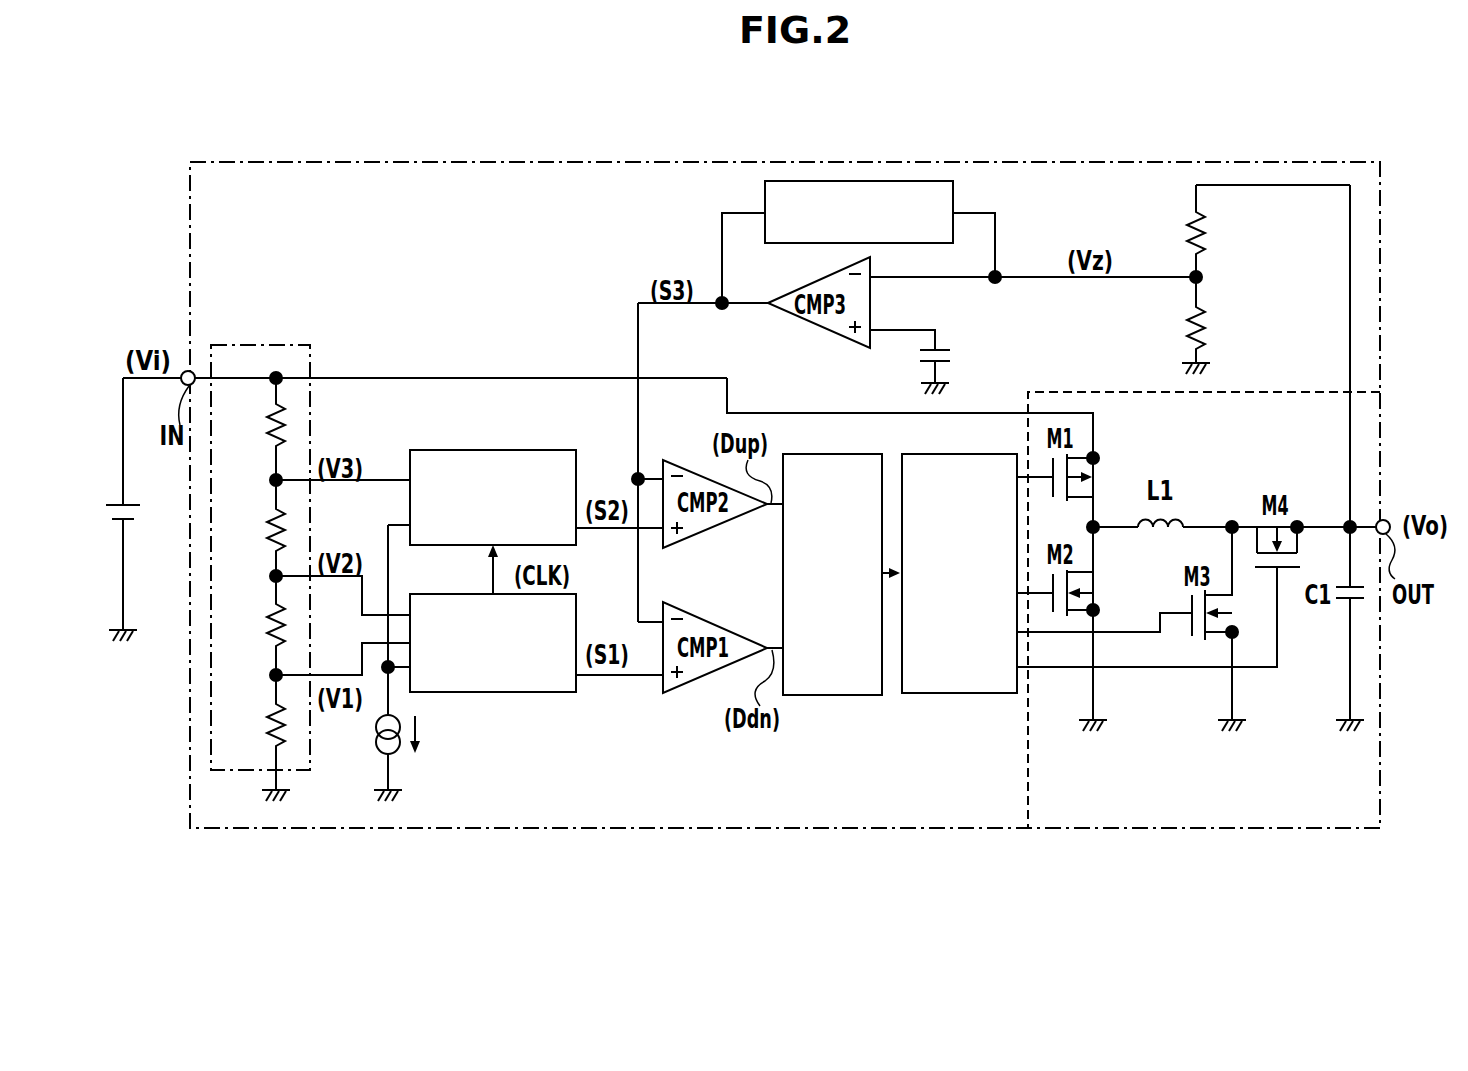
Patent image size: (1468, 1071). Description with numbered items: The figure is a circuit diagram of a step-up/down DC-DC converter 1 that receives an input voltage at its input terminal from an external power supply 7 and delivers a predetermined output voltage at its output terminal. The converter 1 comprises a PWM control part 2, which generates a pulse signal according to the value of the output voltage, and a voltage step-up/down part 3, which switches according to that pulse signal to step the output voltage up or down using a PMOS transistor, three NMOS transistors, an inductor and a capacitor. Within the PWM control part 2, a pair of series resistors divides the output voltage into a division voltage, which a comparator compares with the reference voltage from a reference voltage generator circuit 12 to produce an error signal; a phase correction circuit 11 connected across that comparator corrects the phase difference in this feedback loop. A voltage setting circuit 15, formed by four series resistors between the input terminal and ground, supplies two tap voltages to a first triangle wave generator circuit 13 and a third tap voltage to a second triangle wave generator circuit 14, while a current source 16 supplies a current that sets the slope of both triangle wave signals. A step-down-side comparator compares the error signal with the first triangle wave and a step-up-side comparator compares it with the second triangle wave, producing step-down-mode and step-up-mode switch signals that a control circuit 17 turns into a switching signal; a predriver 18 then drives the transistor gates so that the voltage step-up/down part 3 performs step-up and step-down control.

The step-up/down DC-DC converter 1 is at (836, 152).
The PWM control part 2 is at (1156, 170).
The voltage step-up/down part 3 is at (1169, 798).
The external power supply 7 is at (130, 522).
The phase correction circuit 11 is at (955, 185).
The reference voltage generator circuit 12 is at (921, 352).
The first triangle wave generator circuit 13 is at (548, 692).
The second triangle wave generator circuit 14 is at (545, 450).
The voltage setting circuit 15 is at (280, 338).
The current source 16 is at (376, 748).
The control circuit 17 is at (850, 695).
The predriver 18 is at (972, 693).